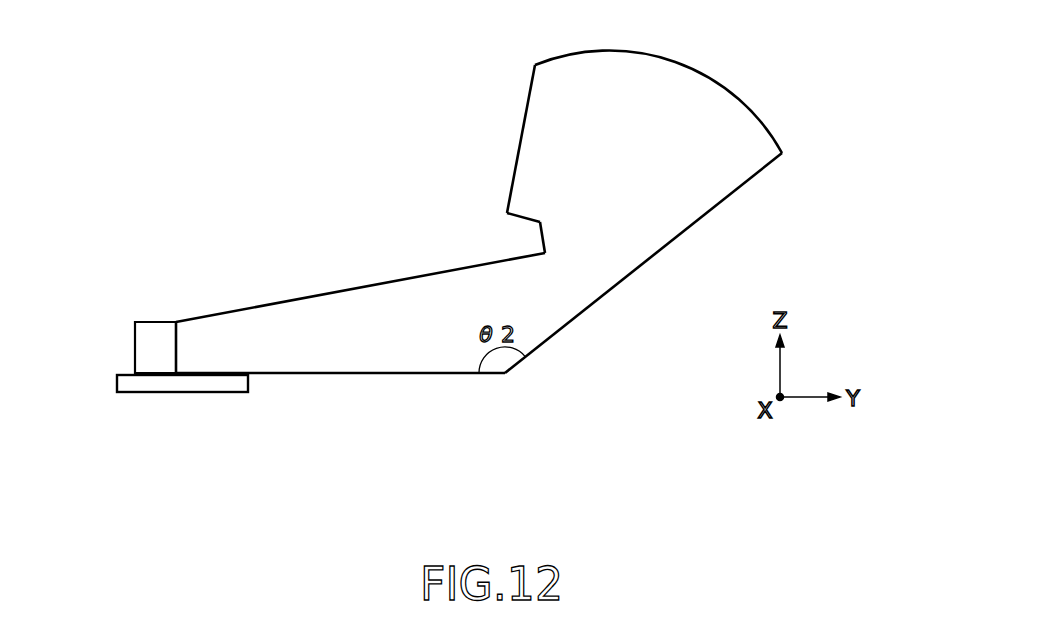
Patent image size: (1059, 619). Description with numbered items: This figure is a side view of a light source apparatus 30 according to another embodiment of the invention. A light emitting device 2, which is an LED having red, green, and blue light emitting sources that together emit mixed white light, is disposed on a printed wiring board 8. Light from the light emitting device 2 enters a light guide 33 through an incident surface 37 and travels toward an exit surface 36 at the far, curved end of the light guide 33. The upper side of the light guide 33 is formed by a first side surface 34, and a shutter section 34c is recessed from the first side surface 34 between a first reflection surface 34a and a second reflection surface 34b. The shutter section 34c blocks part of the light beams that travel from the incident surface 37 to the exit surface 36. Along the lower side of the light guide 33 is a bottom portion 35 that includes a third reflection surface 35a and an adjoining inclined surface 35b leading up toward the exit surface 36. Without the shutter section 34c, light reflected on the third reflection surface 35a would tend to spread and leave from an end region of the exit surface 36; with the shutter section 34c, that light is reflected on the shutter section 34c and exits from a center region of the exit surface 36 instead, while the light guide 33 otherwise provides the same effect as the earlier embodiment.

The light source apparatus 30 is at (346, 68).
The light guide 33 is at (519, 104).
The exit surface 36 is at (745, 102).
The first side surface 34 is at (428, 125).
The first reflection surface 34a is at (343, 290).
The second reflection surface 34b is at (508, 187).
The shutter section 34c is at (520, 240).
The bottom portion 35 is at (523, 472).
The third reflection surface 35a is at (457, 375).
The inclined bottom surface 35b is at (562, 328).
The light emitting device 2 is at (143, 337).
The incident surface 37 is at (176, 357).
The printed wiring board 8 is at (138, 387).